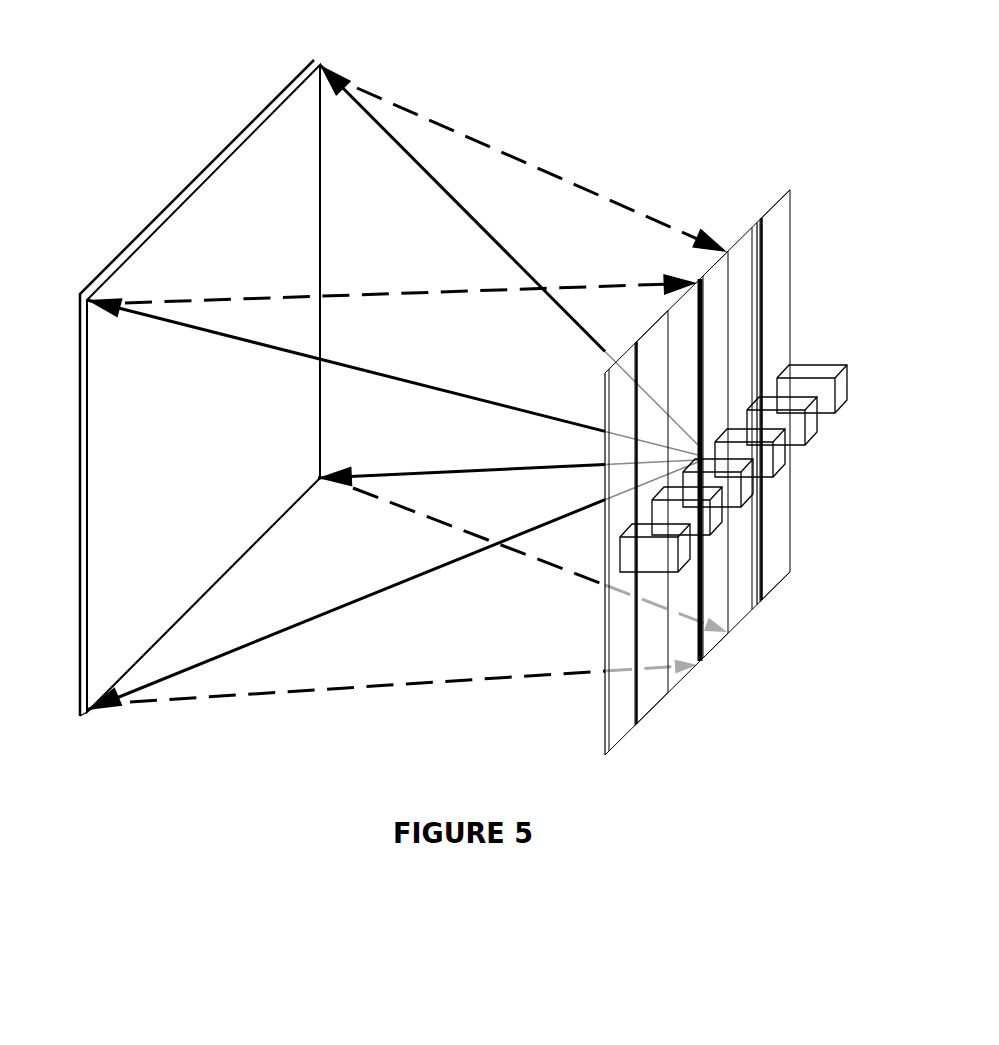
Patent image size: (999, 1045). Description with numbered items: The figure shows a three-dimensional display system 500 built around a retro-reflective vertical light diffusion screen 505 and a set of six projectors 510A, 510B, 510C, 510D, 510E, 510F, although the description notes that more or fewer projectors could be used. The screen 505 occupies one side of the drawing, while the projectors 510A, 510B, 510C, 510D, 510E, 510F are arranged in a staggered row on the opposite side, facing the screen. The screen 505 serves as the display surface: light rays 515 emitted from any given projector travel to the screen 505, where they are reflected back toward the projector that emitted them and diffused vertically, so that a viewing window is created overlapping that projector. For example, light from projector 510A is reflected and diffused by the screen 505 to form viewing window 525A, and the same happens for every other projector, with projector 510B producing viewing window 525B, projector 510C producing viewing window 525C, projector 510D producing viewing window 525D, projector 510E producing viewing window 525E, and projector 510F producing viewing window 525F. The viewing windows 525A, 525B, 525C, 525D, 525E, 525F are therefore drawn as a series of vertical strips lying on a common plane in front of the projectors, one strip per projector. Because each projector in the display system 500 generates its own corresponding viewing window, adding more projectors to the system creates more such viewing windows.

The 3D display system 500 is at (518, 51).
The retro-reflective vertical light diffusion screen 505 is at (322, 63).
The projector 510A is at (655, 548).
The projector 510B is at (687, 511).
The projector 510C is at (718, 483).
The projector 510D is at (750, 453).
The projector 510E is at (782, 421).
The projector 510F is at (812, 389).
The light rays 515 is at (442, 572).
The viewing window 525A is at (625, 743).
The viewing window 525B is at (658, 708).
The viewing window 525C is at (692, 675).
The viewing window 525D is at (723, 643).
The viewing window 525E is at (753, 615).
The viewing window 525F is at (780, 585).